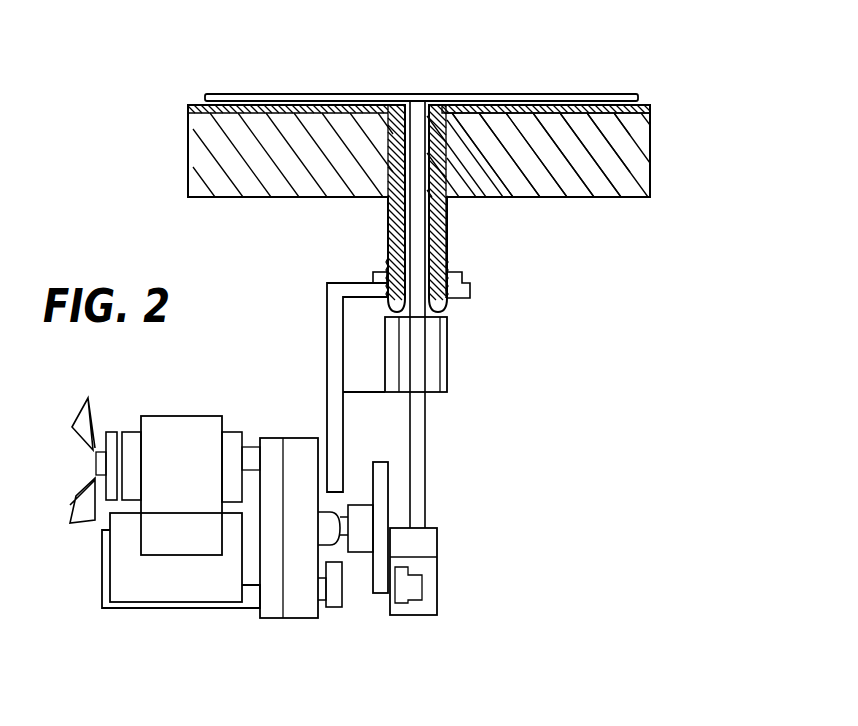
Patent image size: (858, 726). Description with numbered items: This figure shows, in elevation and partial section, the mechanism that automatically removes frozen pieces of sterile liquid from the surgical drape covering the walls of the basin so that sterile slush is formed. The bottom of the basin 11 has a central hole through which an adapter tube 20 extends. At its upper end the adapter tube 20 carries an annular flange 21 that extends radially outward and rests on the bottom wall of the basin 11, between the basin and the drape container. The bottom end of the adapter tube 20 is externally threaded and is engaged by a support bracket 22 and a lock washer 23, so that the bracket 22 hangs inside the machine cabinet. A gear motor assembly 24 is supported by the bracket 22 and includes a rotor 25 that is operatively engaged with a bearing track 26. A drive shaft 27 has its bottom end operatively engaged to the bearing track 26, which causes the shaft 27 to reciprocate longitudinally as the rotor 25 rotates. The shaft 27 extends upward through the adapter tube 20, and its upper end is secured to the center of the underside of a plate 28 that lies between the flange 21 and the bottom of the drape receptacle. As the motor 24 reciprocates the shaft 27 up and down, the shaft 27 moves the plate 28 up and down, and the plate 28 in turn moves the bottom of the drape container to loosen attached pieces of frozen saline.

The basin 11 is at (631, 186).
The adapter tube 20 is at (447, 228).
The annular flange 21 is at (194, 103).
The support bracket 22 is at (327, 328).
The lock washer 23 is at (374, 272).
The gear motor assembly 24 is at (213, 629).
The rotor 25 is at (375, 589).
The bearing track 26 is at (437, 582).
The drive shaft 27 is at (421, 438).
The plate 28 is at (632, 100).